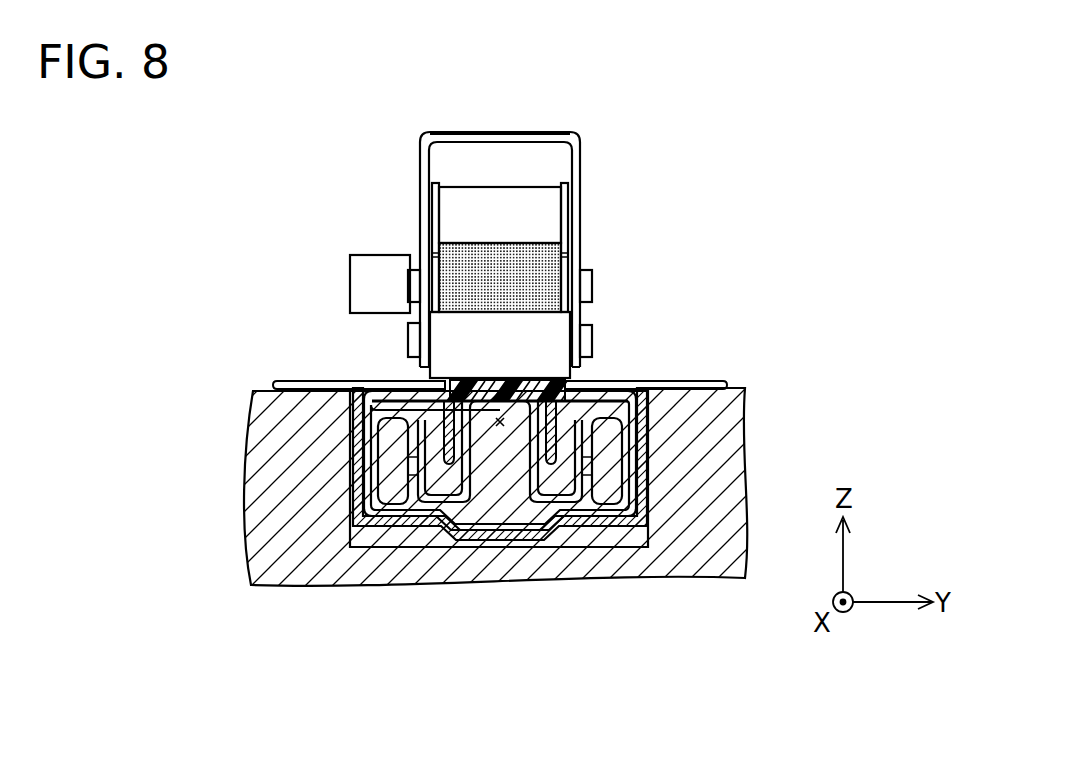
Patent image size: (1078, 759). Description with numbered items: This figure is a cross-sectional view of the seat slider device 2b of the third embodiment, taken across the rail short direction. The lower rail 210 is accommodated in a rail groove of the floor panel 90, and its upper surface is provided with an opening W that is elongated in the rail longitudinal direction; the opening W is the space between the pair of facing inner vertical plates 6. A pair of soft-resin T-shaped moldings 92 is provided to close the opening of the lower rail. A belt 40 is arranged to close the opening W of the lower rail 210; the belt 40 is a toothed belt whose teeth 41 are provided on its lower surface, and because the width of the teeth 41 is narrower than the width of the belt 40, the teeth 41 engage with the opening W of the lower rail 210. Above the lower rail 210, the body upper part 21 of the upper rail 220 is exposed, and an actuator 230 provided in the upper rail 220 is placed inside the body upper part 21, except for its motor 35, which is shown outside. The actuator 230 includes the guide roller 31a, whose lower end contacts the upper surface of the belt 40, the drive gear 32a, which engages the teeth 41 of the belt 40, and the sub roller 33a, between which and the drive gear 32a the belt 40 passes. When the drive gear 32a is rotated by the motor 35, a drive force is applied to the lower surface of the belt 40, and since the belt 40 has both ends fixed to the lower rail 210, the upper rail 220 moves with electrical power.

The seat slider device 2b is at (302, 118).
The sub roller 33a is at (483, 198).
The body upper part 21 is at (519, 134).
The upper rail 220 is at (598, 128).
The belt 40 is at (522, 256).
The actuator 230 is at (606, 249).
The drive gear 32a is at (567, 262).
The guide roller 31a is at (551, 332).
The inner vertical plate 6 is at (553, 417).
The motor 35 is at (371, 255).
The T-shaped molding 92 is at (289, 382).
The floor panel 90 is at (724, 452).
The lower rail 210 is at (368, 530).
The teeth 41 is at (474, 410).
The opening W is at (500, 430).